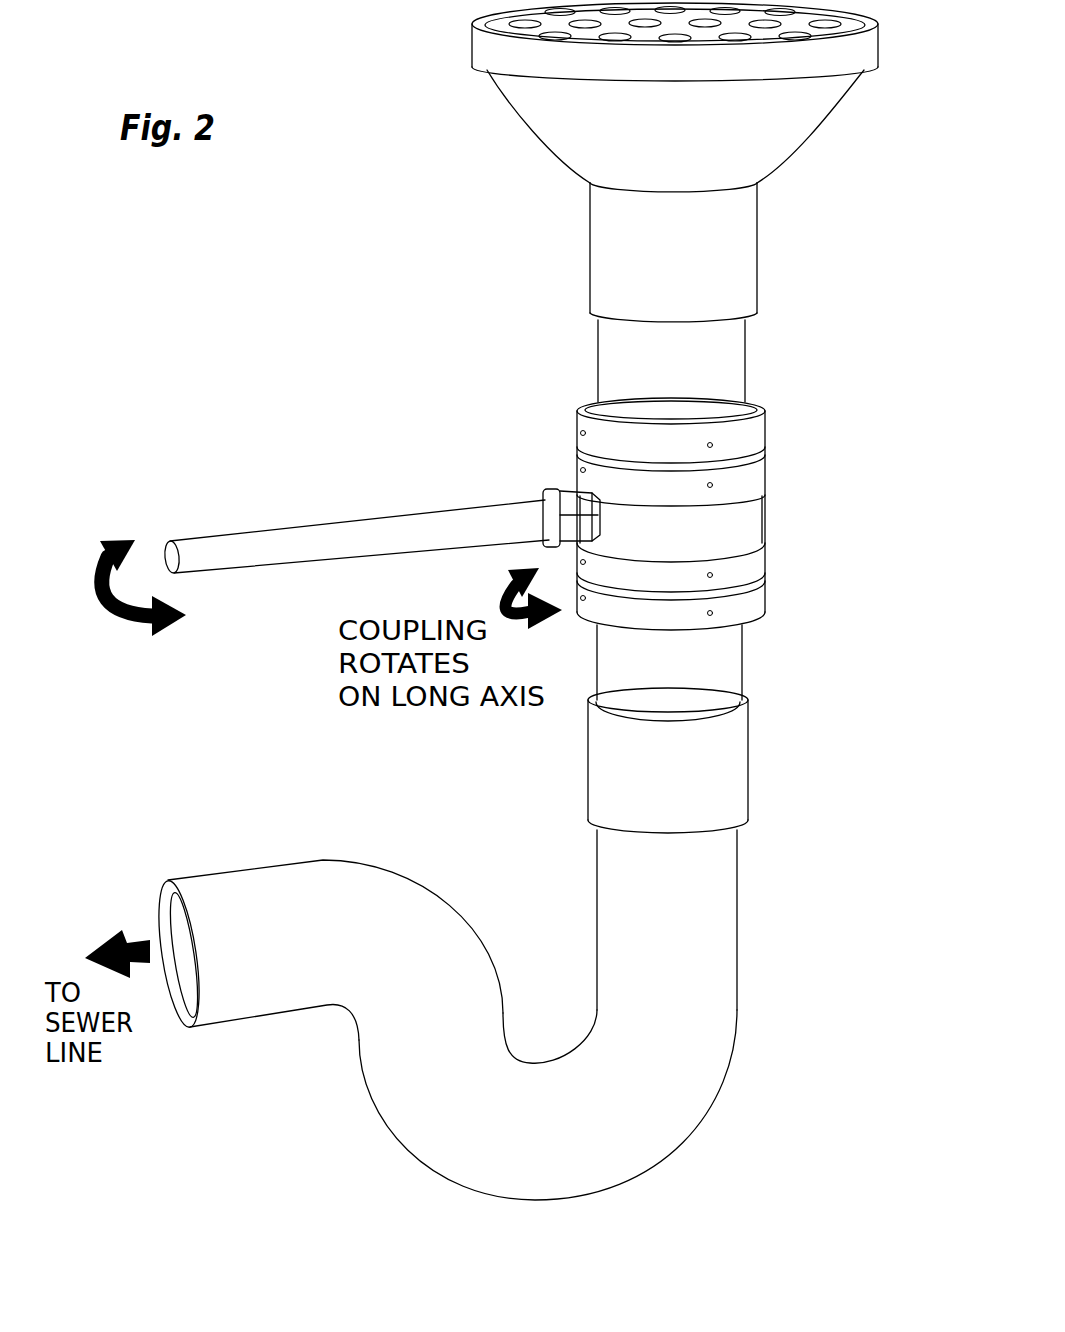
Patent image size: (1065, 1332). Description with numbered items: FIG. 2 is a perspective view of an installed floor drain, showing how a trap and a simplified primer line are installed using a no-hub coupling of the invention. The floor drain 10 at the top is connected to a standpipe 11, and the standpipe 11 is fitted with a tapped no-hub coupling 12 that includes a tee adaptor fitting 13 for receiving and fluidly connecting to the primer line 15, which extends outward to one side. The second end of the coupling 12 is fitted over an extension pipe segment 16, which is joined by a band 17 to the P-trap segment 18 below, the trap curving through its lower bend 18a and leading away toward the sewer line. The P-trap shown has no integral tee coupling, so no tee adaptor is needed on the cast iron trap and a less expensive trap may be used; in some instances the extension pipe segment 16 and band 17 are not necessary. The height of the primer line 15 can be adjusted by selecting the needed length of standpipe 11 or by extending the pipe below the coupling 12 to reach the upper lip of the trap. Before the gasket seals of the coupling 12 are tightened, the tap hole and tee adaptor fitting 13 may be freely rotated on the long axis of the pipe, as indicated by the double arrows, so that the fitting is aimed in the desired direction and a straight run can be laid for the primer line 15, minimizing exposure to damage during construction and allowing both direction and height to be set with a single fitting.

The floor drain 10 is at (505, 152).
The standpipe 11 is at (729, 354).
The tapped no-hub coupling 12 is at (790, 428).
The tee adaptor fitting 13 is at (560, 490).
The primer line 15 is at (408, 522).
The extension pipe segment 16 is at (726, 660).
The band 17 is at (728, 752).
The trap 18 is at (464, 1037).
The trap bend 18a is at (573, 1178).